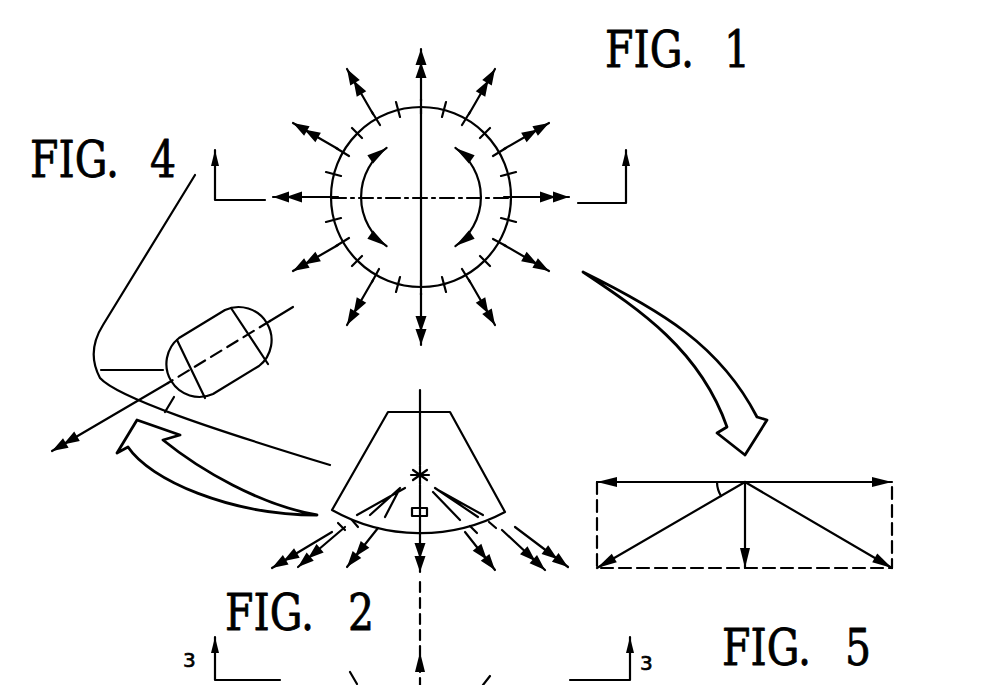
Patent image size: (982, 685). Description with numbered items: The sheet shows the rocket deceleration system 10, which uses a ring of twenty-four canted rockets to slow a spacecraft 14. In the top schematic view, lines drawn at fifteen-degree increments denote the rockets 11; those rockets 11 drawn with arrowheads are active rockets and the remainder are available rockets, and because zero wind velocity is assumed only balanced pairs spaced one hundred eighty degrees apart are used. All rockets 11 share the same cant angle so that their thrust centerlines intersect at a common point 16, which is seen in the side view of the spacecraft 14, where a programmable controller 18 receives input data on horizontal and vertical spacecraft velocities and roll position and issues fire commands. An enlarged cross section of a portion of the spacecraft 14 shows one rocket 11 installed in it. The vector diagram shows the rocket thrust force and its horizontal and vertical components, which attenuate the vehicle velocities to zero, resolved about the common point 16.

In FIG. 1, the rocket deceleration system 10 is at (277, 56).
In FIG. 1, the canted rockets 11 is at (498, 146).
In FIG. 4, the canted rockets 11 is at (237, 380).
In FIG. 2, the canted rockets 11 is at (467, 550).
In FIG. 1, the spacecraft 14 is at (337, 233).
In FIG. 4, the spacecraft 14 is at (140, 258).
In FIG. 2, the spacecraft 14 is at (493, 487).
In FIG. 2, the common point 16 is at (430, 478).
In FIG. 5, the common point 16 is at (746, 481).
In FIG. 2, the programmable controller 18 is at (405, 517).